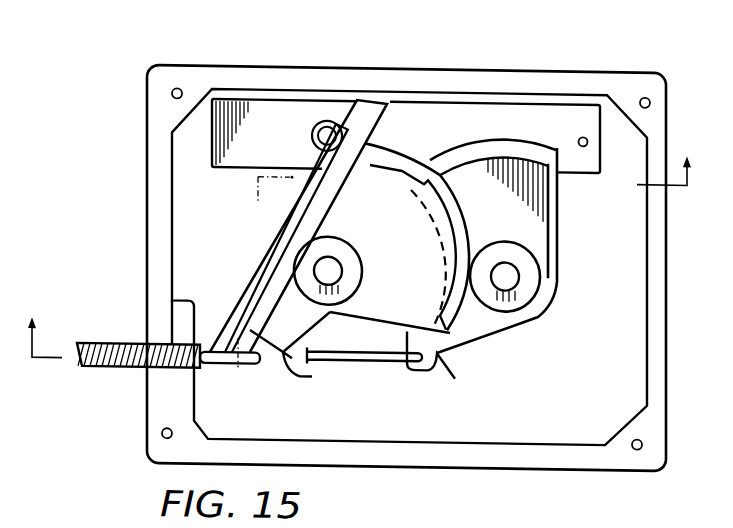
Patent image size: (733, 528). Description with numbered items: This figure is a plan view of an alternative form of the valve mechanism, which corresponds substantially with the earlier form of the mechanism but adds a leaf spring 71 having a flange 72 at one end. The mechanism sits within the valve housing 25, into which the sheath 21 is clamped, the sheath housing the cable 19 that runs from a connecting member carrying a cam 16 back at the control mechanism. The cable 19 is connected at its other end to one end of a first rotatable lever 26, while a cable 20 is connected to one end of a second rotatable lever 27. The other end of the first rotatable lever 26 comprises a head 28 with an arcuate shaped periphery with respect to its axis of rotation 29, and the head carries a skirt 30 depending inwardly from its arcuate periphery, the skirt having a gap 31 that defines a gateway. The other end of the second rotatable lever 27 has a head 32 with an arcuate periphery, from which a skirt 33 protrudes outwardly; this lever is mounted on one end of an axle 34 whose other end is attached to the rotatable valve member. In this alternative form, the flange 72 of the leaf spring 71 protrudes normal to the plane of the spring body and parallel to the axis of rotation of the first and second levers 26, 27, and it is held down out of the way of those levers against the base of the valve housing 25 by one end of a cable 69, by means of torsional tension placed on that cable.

The cam 16 is at (366, 248).
The cable 19 is at (232, 365).
The cable 20 is at (357, 360).
The sheath 21 is at (105, 369).
The valve housing 25 is at (150, 237).
The first rotatable lever 26 is at (296, 376).
The second rotatable lever 27 is at (450, 368).
The head 28 is at (390, 280).
The axis of rotation 29 is at (336, 272).
The skirt 30 is at (402, 160).
The gap 31 is at (448, 196).
The head 32 is at (540, 230).
The skirt 33 is at (508, 146).
The axle 34 is at (510, 275).
The cable 69 is at (290, 230).
The leaf spring 71 is at (283, 113).
The flange 72 is at (358, 120).